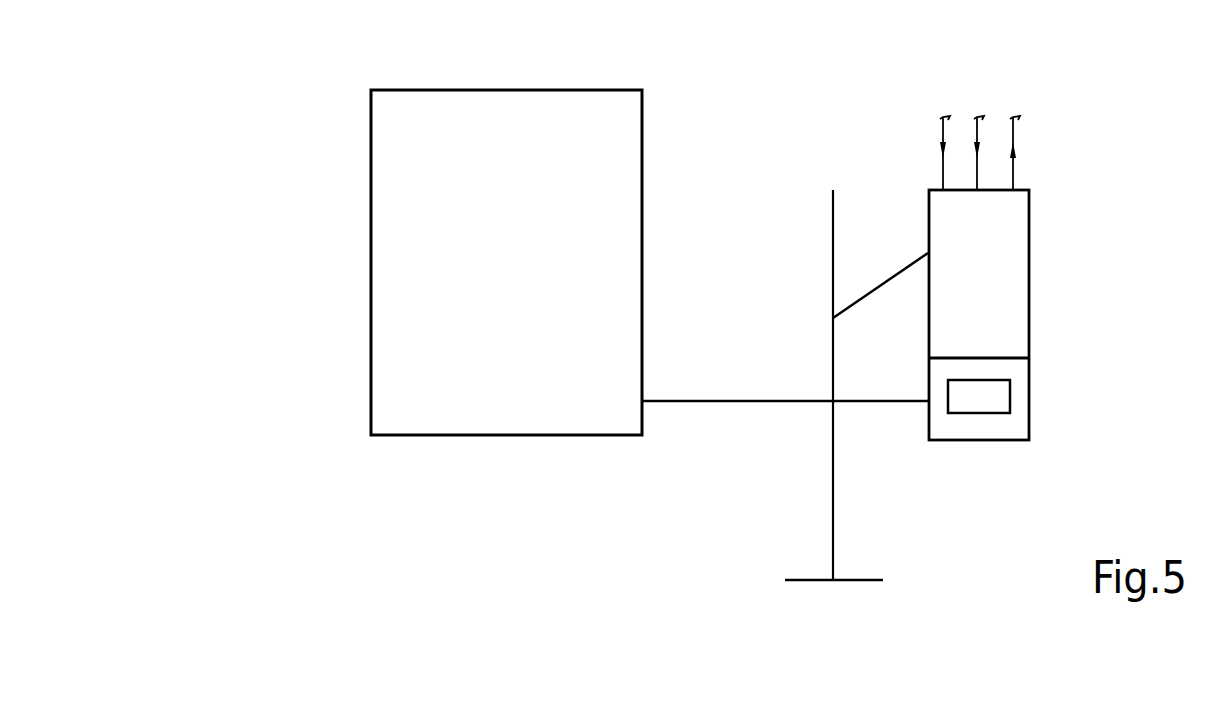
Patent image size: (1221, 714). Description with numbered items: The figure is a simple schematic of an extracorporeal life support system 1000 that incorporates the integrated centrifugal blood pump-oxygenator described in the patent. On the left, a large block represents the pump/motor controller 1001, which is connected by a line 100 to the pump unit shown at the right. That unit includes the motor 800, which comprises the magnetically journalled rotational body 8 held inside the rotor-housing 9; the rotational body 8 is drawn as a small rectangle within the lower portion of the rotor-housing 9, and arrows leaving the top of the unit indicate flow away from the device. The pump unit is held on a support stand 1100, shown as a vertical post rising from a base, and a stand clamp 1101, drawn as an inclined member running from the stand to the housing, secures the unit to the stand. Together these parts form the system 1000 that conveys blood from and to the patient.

The pump/motor controller 1001 is at (538, 88).
The connecting line 100 is at (745, 401).
The support stand 1100 is at (833, 533).
The stand clamp 1101 is at (890, 278).
The extracorporeal life support system 1000 is at (896, 83).
The rotor-housing 9 is at (967, 443).
The motor 800 is at (1017, 412).
The rotational body 8 is at (998, 392).